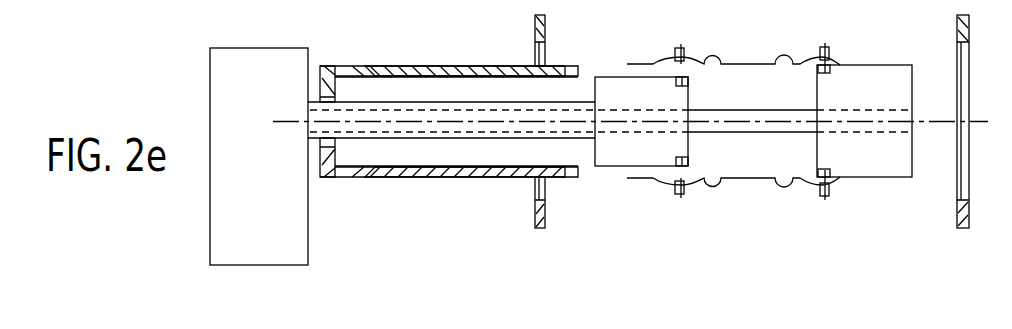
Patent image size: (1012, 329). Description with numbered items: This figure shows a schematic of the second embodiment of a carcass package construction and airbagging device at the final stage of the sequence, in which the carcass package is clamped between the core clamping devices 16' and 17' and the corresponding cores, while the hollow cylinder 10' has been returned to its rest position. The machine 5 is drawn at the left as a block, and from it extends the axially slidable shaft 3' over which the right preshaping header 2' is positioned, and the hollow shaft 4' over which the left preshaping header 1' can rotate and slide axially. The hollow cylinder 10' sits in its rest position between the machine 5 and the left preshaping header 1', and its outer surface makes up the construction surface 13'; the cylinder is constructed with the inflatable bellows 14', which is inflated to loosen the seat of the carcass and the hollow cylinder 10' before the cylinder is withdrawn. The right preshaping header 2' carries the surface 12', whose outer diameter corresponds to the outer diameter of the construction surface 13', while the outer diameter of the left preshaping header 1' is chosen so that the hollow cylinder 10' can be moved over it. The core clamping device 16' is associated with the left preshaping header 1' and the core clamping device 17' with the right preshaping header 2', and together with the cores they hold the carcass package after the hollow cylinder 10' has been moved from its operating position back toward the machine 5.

The machine 5 is at (230, 113).
The hollow cylinder 10' is at (344, 90).
The bellows 14' is at (449, 95).
The construction surface 13' is at (465, 95).
The left preshaping header 1' is at (641, 92).
The core clamping device 16' is at (704, 121).
The right preshaping header 2' is at (864, 99).
The core clamping device 17' is at (847, 121).
The surface 12' is at (929, 120).
The shaft 3' is at (610, 160).
The hollow shaft 4' is at (630, 169).